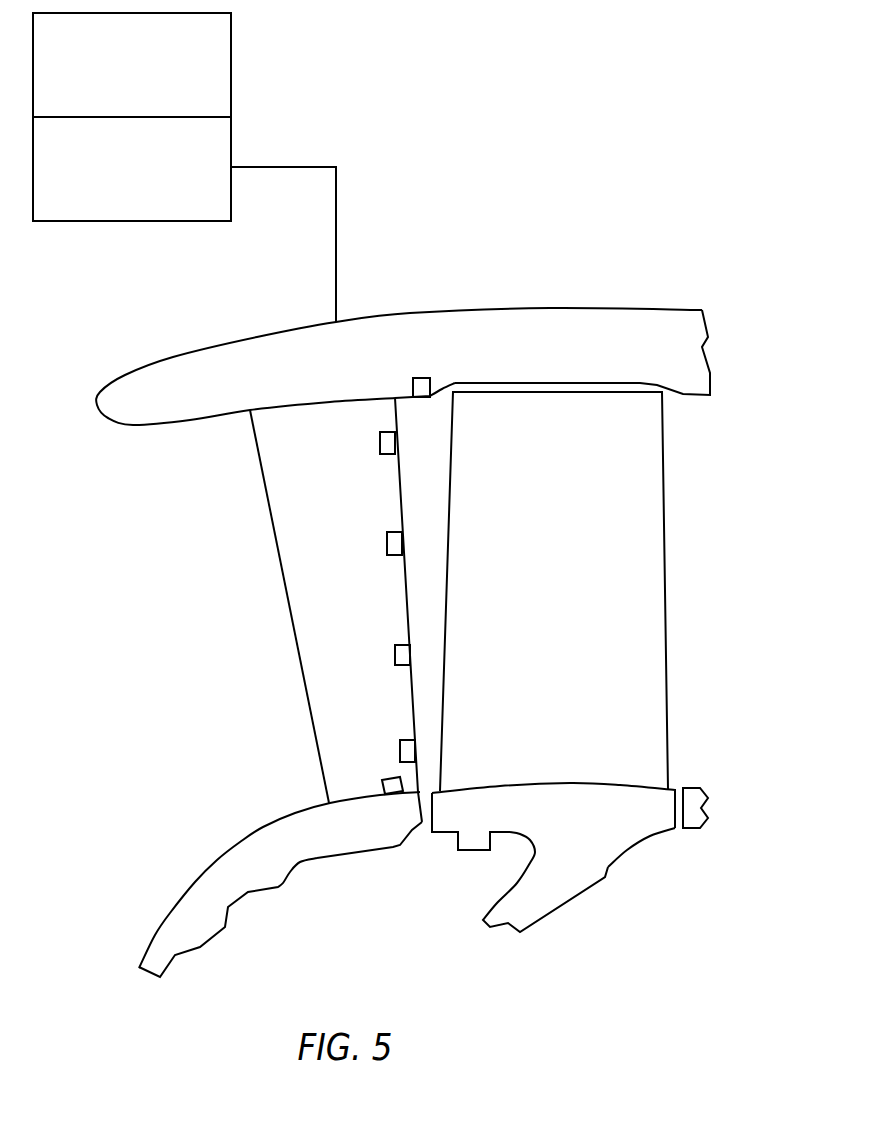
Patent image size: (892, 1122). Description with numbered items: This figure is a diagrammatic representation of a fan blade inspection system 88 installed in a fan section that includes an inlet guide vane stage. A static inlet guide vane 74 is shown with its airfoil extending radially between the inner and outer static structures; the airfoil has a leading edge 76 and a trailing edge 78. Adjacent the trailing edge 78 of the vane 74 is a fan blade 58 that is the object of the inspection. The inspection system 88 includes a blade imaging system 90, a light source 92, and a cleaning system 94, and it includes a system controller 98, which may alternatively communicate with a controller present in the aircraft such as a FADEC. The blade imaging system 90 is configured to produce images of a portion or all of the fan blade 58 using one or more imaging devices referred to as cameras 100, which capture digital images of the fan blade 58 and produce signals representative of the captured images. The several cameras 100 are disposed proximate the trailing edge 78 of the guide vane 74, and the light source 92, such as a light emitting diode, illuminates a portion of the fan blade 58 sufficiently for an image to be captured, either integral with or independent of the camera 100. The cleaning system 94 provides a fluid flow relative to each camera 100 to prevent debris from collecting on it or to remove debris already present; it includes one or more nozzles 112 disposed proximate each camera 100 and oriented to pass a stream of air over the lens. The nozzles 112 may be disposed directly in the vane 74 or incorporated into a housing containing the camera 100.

The fan blade 58 is at (573, 632).
The inlet guide vane 74 is at (340, 610).
The leading edge 76 is at (287, 600).
The trailing edge 78 is at (407, 590).
The fan blade inspection system 88 is at (146, 105).
The blade imaging system 90 is at (338, 557).
The light source 92 is at (422, 378).
The cleaning system 94 is at (380, 445).
The system controller 98 is at (123, 210).
The camera 100 is at (397, 660).
The nozzle 112 is at (307, 522).